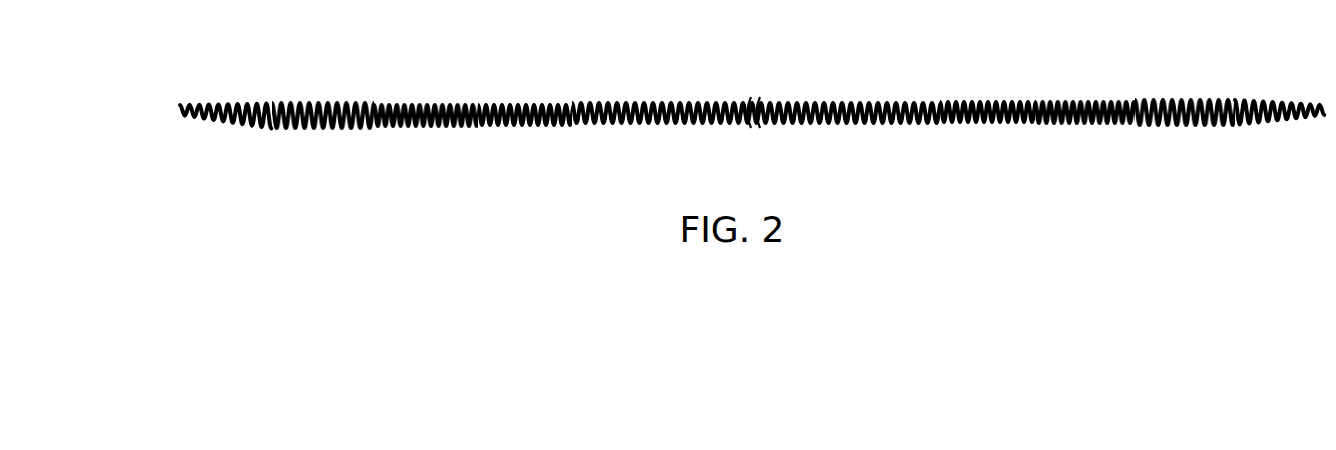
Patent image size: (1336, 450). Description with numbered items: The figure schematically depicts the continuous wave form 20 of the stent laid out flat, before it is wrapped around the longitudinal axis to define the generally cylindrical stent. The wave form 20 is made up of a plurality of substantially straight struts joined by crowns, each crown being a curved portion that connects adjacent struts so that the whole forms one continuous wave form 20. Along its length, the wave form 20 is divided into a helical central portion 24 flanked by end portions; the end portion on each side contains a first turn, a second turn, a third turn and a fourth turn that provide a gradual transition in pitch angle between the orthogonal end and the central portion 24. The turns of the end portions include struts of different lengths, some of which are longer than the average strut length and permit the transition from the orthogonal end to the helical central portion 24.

The wave form 20 is at (178, 62).
The central portion 24 is at (936, 52).